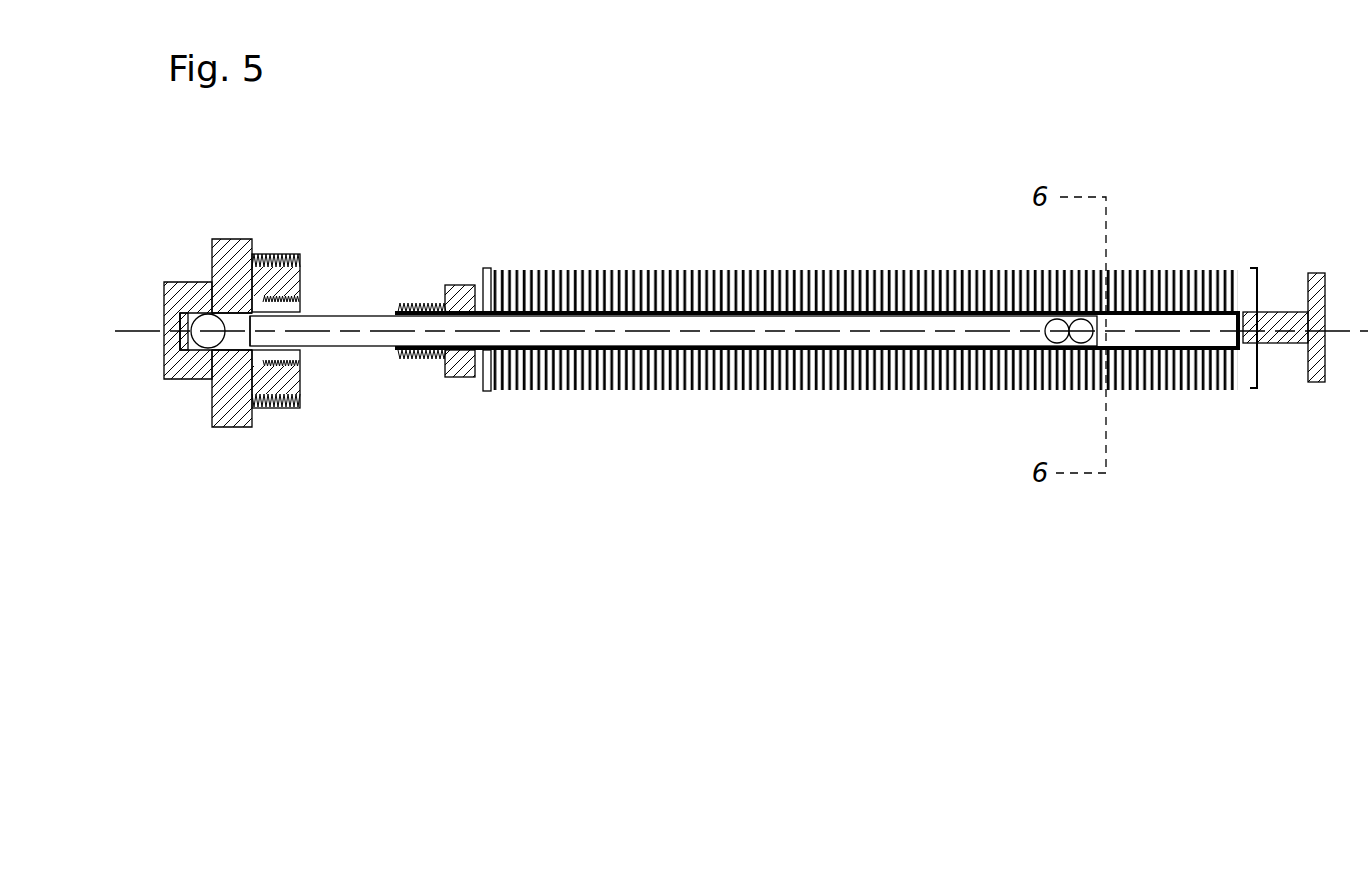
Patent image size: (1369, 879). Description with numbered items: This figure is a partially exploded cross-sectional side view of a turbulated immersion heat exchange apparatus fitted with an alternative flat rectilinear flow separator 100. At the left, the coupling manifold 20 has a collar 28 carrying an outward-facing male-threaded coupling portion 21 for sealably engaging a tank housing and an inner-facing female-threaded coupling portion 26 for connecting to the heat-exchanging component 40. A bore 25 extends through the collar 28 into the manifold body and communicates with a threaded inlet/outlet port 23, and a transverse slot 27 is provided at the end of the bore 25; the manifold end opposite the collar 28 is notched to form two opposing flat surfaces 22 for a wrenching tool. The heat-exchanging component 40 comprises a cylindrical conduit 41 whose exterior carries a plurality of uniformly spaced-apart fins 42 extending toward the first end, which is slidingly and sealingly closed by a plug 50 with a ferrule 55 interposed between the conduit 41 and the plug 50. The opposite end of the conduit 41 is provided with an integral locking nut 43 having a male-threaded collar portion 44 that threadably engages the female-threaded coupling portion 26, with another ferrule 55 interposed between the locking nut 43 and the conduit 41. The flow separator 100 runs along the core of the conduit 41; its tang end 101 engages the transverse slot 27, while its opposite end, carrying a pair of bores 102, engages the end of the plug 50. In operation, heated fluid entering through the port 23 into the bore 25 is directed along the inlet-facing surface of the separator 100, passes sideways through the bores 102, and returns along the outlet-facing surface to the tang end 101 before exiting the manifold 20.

The coupling manifold 20 is at (226, 332).
The male-threaded coupling portion 21 is at (268, 412).
The flat surfaces 22 is at (182, 282).
The inlet/outlet port 23 is at (200, 344).
The bore 25 is at (239, 350).
The female-threaded coupling portion 26 is at (288, 368).
The transverse slot 27 is at (190, 282).
The collar 28 is at (279, 247).
The heat-exchanging component 40 is at (816, 327).
The cylindrical conduit 41 is at (395, 348).
The fins 42 is at (688, 270).
The locking nut 43 is at (455, 377).
The male-threaded collar portion 44 is at (418, 302).
The plug 50 is at (1318, 383).
The ferrule 55 is at (487, 392).
The flat rectilinear flow separator 100 is at (331, 316).
The tang end 101 is at (267, 339).
The bores 102 is at (1069, 340).